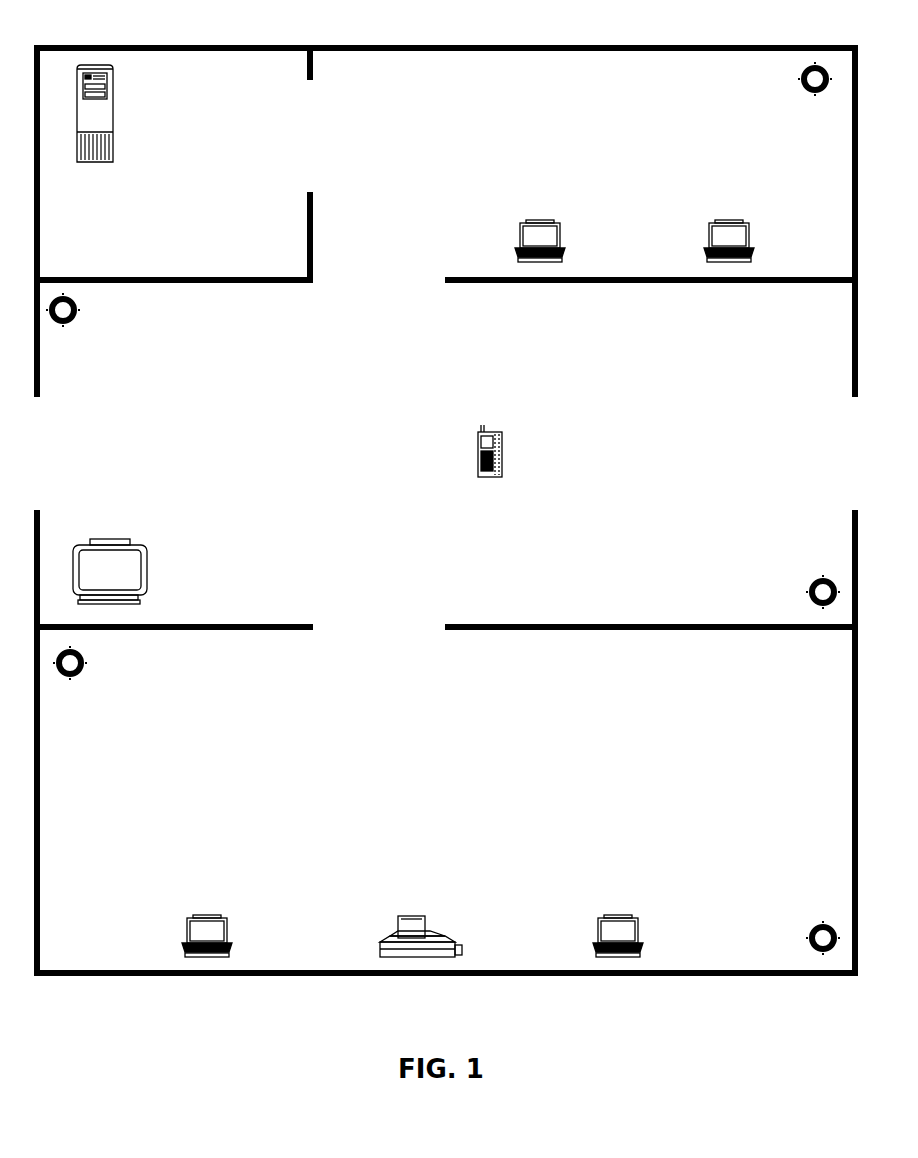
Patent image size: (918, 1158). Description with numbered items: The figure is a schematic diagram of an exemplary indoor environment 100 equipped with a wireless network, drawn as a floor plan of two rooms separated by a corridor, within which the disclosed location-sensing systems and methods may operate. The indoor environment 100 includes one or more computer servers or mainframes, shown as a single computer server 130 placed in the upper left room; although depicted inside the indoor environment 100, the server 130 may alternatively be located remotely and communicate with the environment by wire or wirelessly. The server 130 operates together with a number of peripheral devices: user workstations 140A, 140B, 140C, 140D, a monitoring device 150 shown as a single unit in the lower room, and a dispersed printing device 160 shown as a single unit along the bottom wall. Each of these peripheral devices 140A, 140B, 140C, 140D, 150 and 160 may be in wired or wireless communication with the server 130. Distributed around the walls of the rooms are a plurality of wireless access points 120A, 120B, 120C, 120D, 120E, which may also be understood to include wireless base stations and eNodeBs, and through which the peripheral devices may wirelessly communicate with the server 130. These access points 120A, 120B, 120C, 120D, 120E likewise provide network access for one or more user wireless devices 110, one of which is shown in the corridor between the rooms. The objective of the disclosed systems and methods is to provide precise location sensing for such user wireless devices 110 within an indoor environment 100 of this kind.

The indoor environment 100 is at (446, 491).
The user wireless device 110 is at (452, 451).
The wireless access point 120A is at (775, 79).
The wireless access point 120B is at (98, 310).
The wireless access point 120C is at (783, 592).
The wireless access point 120D is at (106, 663).
The wireless access point 120E is at (785, 938).
The computer server 130 is at (126, 113).
The user workstation 140A is at (497, 241).
The user workstation 140B is at (689, 241).
The user workstation 140C is at (164, 933).
The user workstation 140D is at (580, 933).
The monitoring device 150 is at (141, 571).
The printing device 160 is at (395, 933).